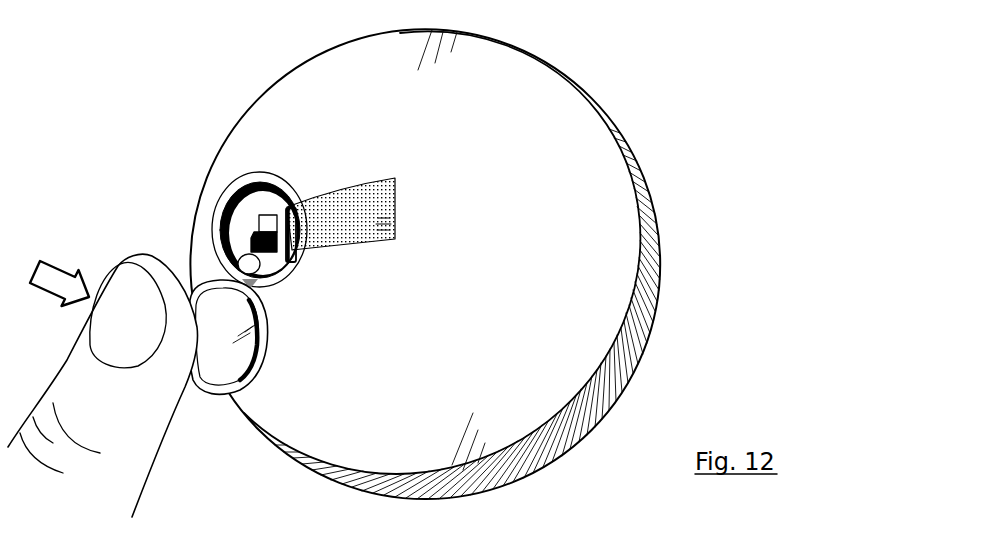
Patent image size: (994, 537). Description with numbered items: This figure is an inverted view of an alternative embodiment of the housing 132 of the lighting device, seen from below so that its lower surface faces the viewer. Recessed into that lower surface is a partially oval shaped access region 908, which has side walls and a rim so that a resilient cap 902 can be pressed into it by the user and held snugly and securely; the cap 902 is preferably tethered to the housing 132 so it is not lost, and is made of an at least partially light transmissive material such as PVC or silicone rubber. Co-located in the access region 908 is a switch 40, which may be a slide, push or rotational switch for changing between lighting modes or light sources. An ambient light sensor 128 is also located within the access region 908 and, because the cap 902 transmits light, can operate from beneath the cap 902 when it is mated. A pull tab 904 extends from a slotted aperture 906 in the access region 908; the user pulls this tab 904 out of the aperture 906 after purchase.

The switch 40 is at (264, 215).
The housing 132 is at (557, 137).
The ambient light sensor 128 is at (248, 264).
The access region 908 is at (220, 223).
The slotted aperture 906 is at (297, 268).
The pull tab 904 is at (372, 210).
The resilient cap 902 is at (226, 372).